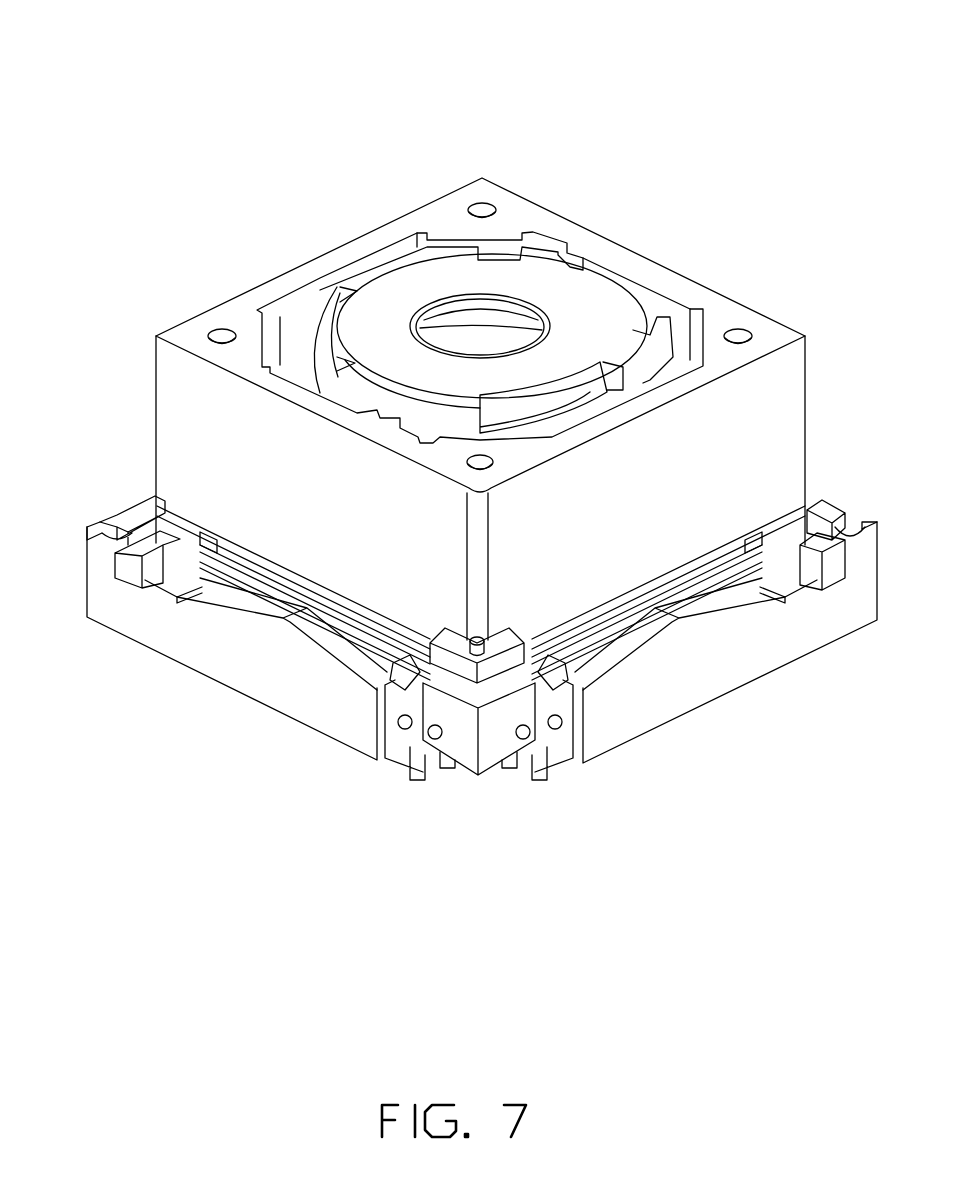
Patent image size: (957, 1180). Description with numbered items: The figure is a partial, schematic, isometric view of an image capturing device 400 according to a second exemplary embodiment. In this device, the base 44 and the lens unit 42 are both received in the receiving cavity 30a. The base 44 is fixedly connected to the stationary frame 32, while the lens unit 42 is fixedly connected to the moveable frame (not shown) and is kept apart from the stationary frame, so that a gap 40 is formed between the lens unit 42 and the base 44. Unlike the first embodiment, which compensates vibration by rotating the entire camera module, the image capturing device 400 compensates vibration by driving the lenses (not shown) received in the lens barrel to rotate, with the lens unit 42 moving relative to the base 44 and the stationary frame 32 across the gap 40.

The image capturing device 400 is at (411, 46).
The lens unit 42 is at (180, 397).
The base 44 is at (177, 568).
The gap 40 is at (725, 585).
The receiving cavity 30a is at (785, 566).
The stationary frame 32 is at (637, 705).